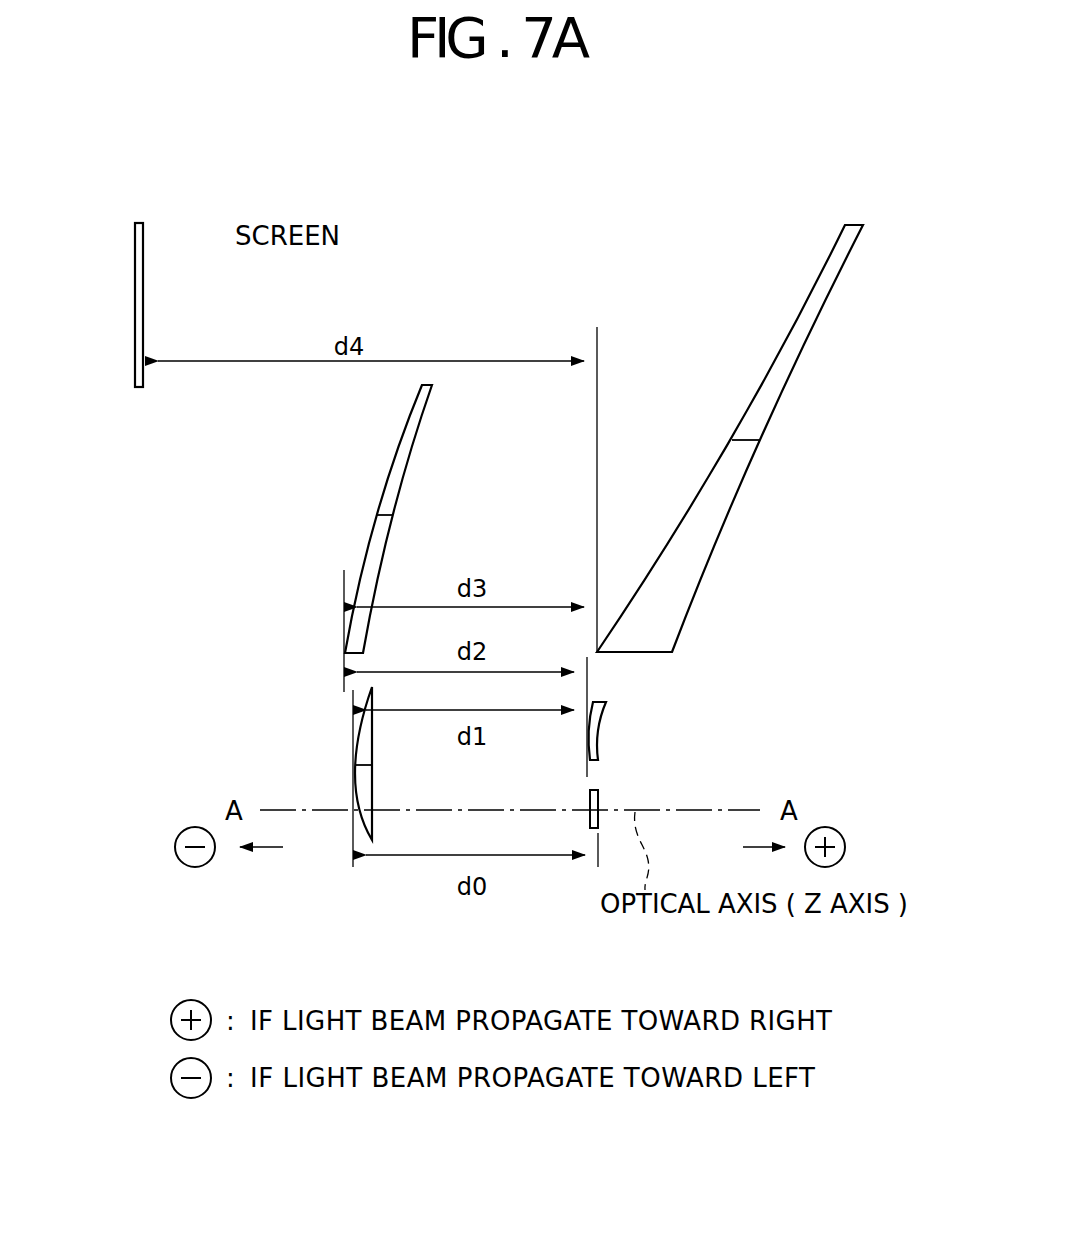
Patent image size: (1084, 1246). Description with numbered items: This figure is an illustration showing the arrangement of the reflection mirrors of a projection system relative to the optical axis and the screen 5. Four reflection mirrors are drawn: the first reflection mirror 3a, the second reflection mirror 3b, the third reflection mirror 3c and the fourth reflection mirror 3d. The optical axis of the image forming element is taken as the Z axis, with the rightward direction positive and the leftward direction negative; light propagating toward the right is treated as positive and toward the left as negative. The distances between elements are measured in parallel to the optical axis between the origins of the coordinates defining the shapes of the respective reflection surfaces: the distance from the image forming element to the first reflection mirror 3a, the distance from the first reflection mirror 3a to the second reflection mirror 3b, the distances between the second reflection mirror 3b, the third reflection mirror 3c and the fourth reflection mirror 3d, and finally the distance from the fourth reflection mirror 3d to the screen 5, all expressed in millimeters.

The screen 5 is at (143, 252).
The first reflection mirror 3a is at (355, 739).
The second reflection mirror 3b is at (600, 736).
The third reflection mirror 3c is at (395, 471).
The fourth reflection mirror 3d is at (792, 353).